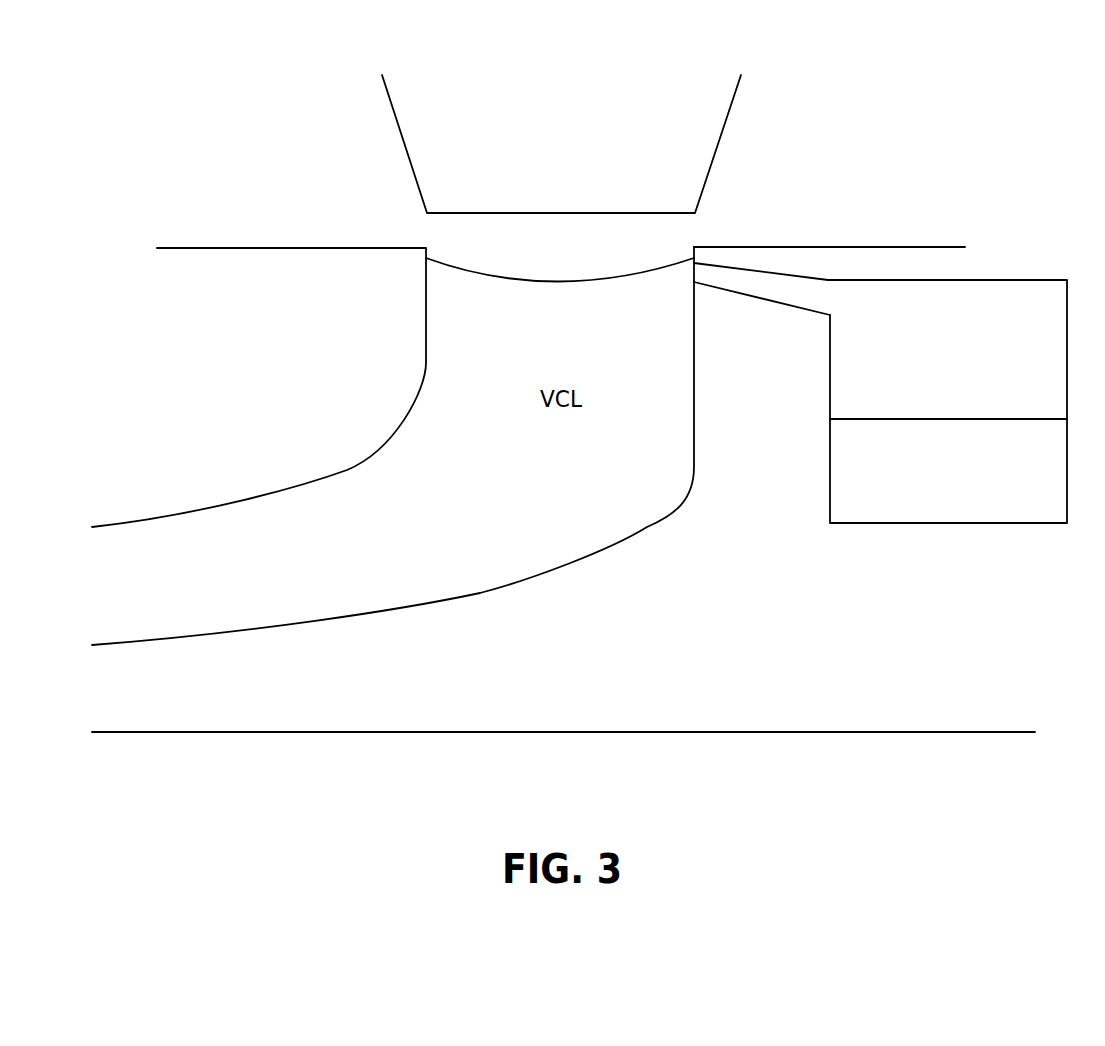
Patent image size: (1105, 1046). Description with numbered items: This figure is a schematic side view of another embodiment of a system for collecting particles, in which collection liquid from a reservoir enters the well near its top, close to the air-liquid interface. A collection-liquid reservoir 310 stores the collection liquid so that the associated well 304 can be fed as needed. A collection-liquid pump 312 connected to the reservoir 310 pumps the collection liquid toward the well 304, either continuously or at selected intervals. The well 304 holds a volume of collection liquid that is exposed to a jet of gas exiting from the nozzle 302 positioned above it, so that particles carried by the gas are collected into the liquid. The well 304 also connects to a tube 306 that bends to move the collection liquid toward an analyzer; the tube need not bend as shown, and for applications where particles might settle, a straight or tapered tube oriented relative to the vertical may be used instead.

The nozzle 302 is at (542, 170).
The well 304 is at (683, 240).
The tube 306 is at (343, 472).
The collection-liquid reservoir 310 is at (967, 384).
The collection-liquid pump 312 is at (967, 498).